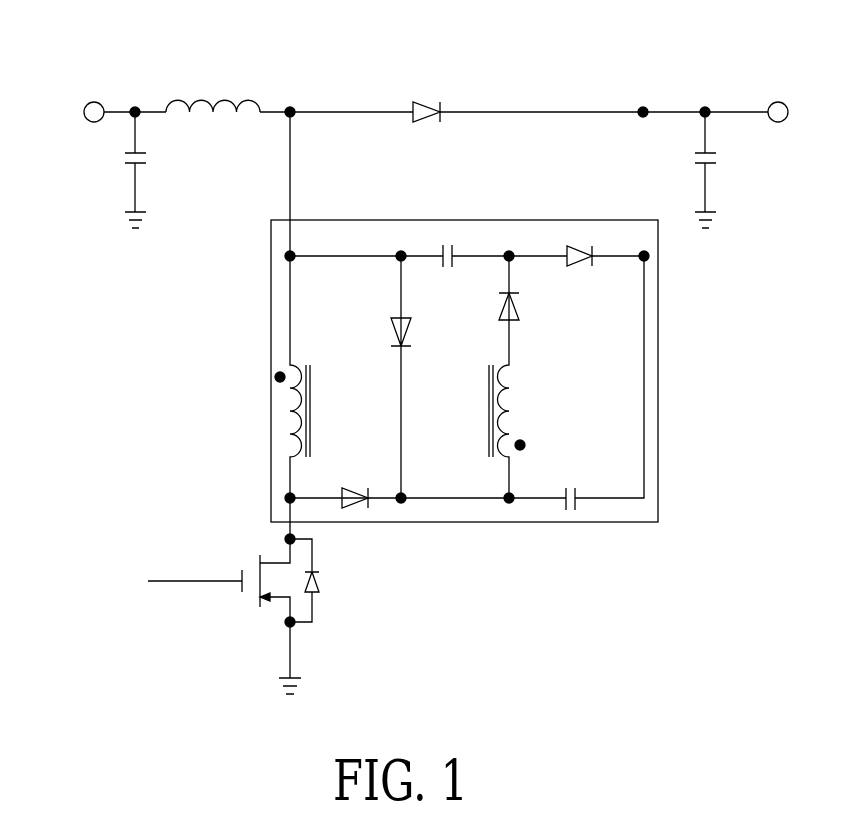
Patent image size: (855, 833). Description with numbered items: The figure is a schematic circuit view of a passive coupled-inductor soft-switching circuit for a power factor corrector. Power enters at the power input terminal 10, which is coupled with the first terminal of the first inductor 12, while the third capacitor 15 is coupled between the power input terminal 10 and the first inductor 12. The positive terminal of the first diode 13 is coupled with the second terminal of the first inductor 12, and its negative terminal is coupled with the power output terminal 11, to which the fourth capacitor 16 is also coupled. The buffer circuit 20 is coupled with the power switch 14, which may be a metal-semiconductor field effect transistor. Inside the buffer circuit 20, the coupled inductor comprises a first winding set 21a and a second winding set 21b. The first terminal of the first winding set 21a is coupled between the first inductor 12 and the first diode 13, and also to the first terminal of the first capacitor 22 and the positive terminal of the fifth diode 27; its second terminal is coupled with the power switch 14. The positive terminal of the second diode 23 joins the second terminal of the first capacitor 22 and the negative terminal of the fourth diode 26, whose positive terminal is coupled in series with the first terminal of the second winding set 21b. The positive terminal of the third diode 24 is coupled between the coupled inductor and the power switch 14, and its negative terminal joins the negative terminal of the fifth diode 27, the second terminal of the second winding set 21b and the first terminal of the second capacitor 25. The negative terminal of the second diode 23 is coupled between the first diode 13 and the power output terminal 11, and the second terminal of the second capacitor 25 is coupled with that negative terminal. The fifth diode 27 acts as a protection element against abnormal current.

The power input terminal 10 is at (88, 102).
The power output terminal 11 is at (772, 101).
The first inductor 12 is at (176, 99).
The first diode 13 is at (426, 101).
The power switch 14 is at (255, 549).
The third capacitor 15 is at (127, 167).
The fourth capacitor 16 is at (718, 166).
The buffer circuit 20 is at (661, 488).
The first winding set 21a is at (288, 398).
The second winding set 21b is at (536, 389).
The first capacitor 22 is at (460, 245).
The second diode 23 is at (580, 247).
The third diode 24 is at (357, 507).
The second capacitor 25 is at (581, 506).
The fourth diode 26 is at (495, 310).
The fifth diode 27 is at (390, 352).